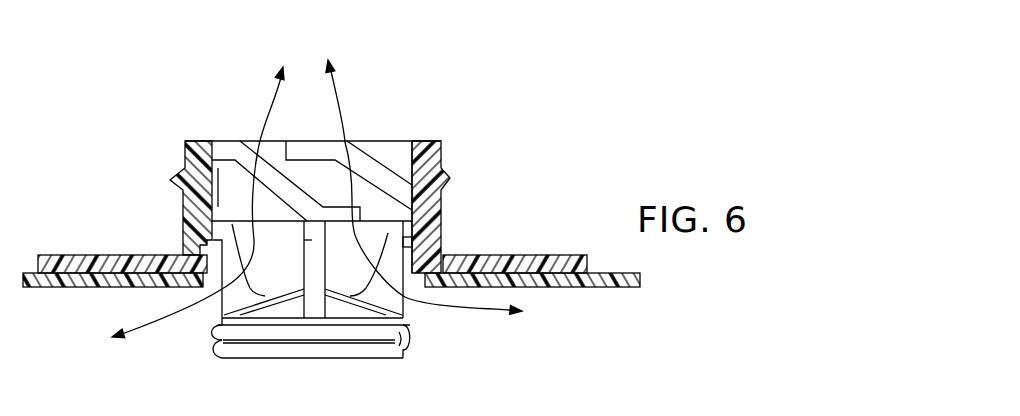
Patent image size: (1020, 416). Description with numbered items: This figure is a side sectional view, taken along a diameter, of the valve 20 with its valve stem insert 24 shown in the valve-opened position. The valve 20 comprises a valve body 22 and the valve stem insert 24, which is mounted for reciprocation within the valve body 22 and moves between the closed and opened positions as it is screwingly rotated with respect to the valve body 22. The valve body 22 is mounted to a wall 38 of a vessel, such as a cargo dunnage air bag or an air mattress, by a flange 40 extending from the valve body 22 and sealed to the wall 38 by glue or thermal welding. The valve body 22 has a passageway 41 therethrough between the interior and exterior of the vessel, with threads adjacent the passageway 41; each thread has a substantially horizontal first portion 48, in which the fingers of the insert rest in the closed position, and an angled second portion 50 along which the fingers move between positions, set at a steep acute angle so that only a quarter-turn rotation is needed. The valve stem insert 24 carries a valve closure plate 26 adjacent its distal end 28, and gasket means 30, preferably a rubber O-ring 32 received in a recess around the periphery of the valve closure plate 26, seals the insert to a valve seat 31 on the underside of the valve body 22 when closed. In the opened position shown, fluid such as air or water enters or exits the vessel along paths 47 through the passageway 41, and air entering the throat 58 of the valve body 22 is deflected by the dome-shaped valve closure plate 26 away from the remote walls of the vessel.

The valve 20 is at (481, 182).
The valve body 22 is at (428, 160).
The valve stem insert 24 is at (393, 298).
The valve closure plate 26 is at (219, 322).
The distal end 28 is at (298, 359).
The gasket means 30 is at (422, 358).
The valve seat 31 is at (217, 262).
The O-ring 32 is at (220, 338).
The wall 38 is at (612, 266).
The flange 40 is at (539, 255).
The passageway 41 is at (364, 124).
The paths 47 is at (344, 133).
The first portion 48 is at (312, 181).
The second portion 50 is at (382, 162).
The throat 58 is at (230, 124).